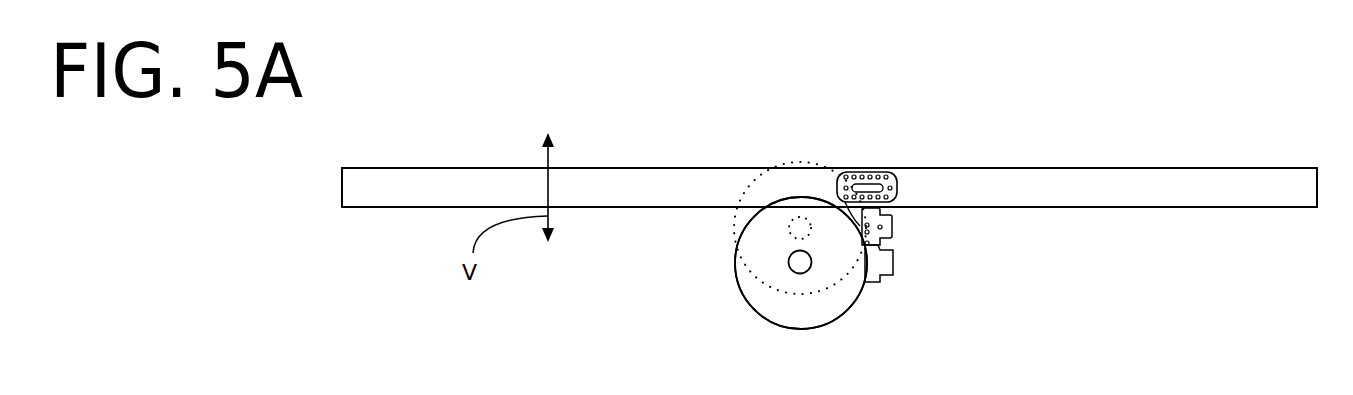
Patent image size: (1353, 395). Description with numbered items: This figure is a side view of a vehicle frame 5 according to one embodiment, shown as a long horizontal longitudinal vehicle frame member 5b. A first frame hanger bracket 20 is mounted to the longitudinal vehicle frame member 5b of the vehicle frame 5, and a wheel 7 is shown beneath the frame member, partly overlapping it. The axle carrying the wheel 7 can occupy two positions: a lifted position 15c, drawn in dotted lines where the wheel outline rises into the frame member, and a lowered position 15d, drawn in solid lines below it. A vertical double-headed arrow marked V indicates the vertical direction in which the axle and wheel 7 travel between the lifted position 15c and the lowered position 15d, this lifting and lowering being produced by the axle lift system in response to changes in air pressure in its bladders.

The vehicle frame 5 is at (1172, 230).
The longitudinal vehicle frame member 5b is at (1055, 207).
The wheel 7 is at (842, 313).
The lifted position 15c is at (748, 192).
The lowered position 15d is at (760, 313).
The first frame hanger bracket 20 is at (893, 198).